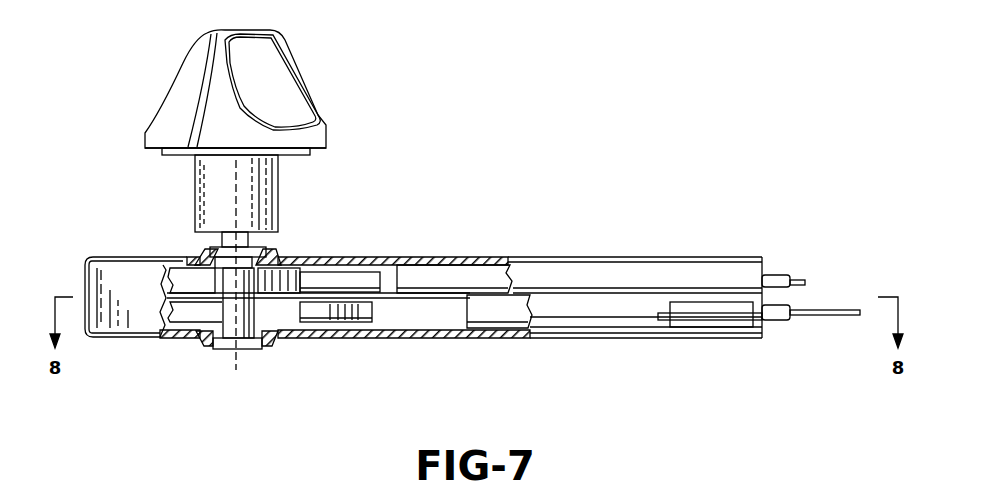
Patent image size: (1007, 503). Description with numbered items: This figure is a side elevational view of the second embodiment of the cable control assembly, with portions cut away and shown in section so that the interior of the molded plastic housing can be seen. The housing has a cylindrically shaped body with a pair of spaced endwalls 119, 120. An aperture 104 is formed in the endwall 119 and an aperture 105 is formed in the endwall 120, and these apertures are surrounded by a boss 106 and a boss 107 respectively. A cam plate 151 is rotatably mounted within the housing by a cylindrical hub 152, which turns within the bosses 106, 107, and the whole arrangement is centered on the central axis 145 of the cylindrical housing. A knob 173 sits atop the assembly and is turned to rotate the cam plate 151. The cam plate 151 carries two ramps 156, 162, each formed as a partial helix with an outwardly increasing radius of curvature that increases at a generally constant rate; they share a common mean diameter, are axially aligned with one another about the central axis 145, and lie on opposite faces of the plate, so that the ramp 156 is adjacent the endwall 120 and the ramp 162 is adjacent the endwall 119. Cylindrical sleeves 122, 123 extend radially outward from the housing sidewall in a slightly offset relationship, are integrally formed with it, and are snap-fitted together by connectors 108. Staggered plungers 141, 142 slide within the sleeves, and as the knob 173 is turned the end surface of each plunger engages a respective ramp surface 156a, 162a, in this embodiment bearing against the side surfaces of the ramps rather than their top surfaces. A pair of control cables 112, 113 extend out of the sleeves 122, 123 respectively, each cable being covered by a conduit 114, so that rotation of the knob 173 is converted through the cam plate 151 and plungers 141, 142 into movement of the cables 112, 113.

The knob 173 is at (278, 77).
The aperture 104 is at (250, 250).
The boss 106 is at (204, 248).
The cylindrical hub 152 is at (243, 338).
The central axis 145 is at (228, 368).
The boss 107 is at (262, 344).
The aperture 105 is at (225, 348).
The endwall 119 is at (103, 257).
The ramp 162 is at (267, 273).
The endwall 120 is at (353, 340).
The cam plate 151 is at (198, 293).
The ramp 156 is at (190, 318).
The ramp surface 162a is at (300, 282).
The ramp surface 156a is at (372, 313).
The plunger 142 is at (433, 272).
The plunger 141 is at (500, 313).
The cylindrical sleeve 122 is at (635, 270).
The cylindrical sleeve 123 is at (607, 320).
The connectors 108 is at (703, 300).
The conduit 114 is at (776, 280).
The control cable 113 is at (800, 281).
The control cable 112 is at (829, 317).